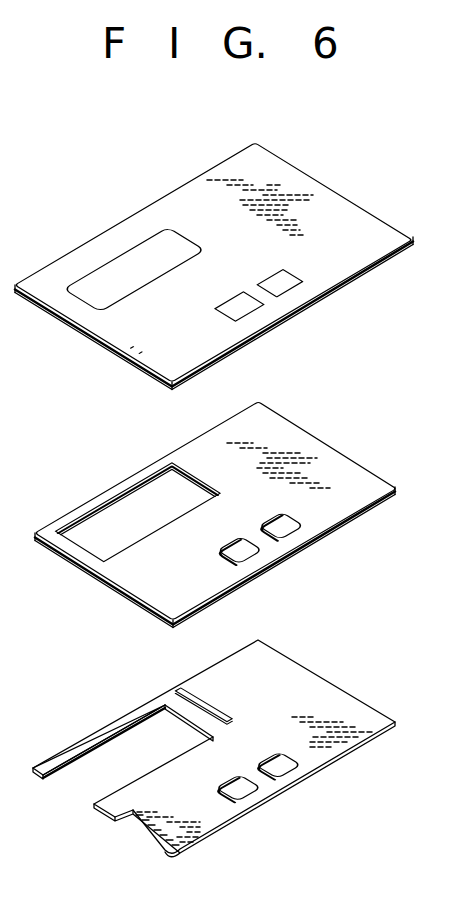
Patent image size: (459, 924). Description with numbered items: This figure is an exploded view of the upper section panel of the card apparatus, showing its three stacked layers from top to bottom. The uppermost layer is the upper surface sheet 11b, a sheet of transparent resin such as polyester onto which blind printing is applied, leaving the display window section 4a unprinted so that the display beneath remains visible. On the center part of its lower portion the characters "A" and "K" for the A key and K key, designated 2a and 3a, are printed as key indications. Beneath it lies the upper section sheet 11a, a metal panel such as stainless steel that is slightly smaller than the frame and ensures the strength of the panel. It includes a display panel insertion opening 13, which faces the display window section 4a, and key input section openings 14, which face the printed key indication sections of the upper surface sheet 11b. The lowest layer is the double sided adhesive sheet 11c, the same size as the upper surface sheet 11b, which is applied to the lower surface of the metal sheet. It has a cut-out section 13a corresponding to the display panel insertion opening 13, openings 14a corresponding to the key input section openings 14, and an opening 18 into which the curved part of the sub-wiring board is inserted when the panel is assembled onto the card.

The upper surface sheet 11b is at (325, 198).
The display window section 4a is at (93, 285).
The character "A" for A key 2a is at (253, 305).
The character "K" for K key 3a is at (283, 288).
The upper section sheet 11a is at (328, 468).
The display panel insertion opening 13 is at (100, 506).
The key input section openings 14 is at (288, 534).
The double sided adhesive sheet 11c is at (328, 695).
The cut-out section 13a is at (80, 750).
The opening 18 is at (233, 713).
The openings 14a is at (295, 772).